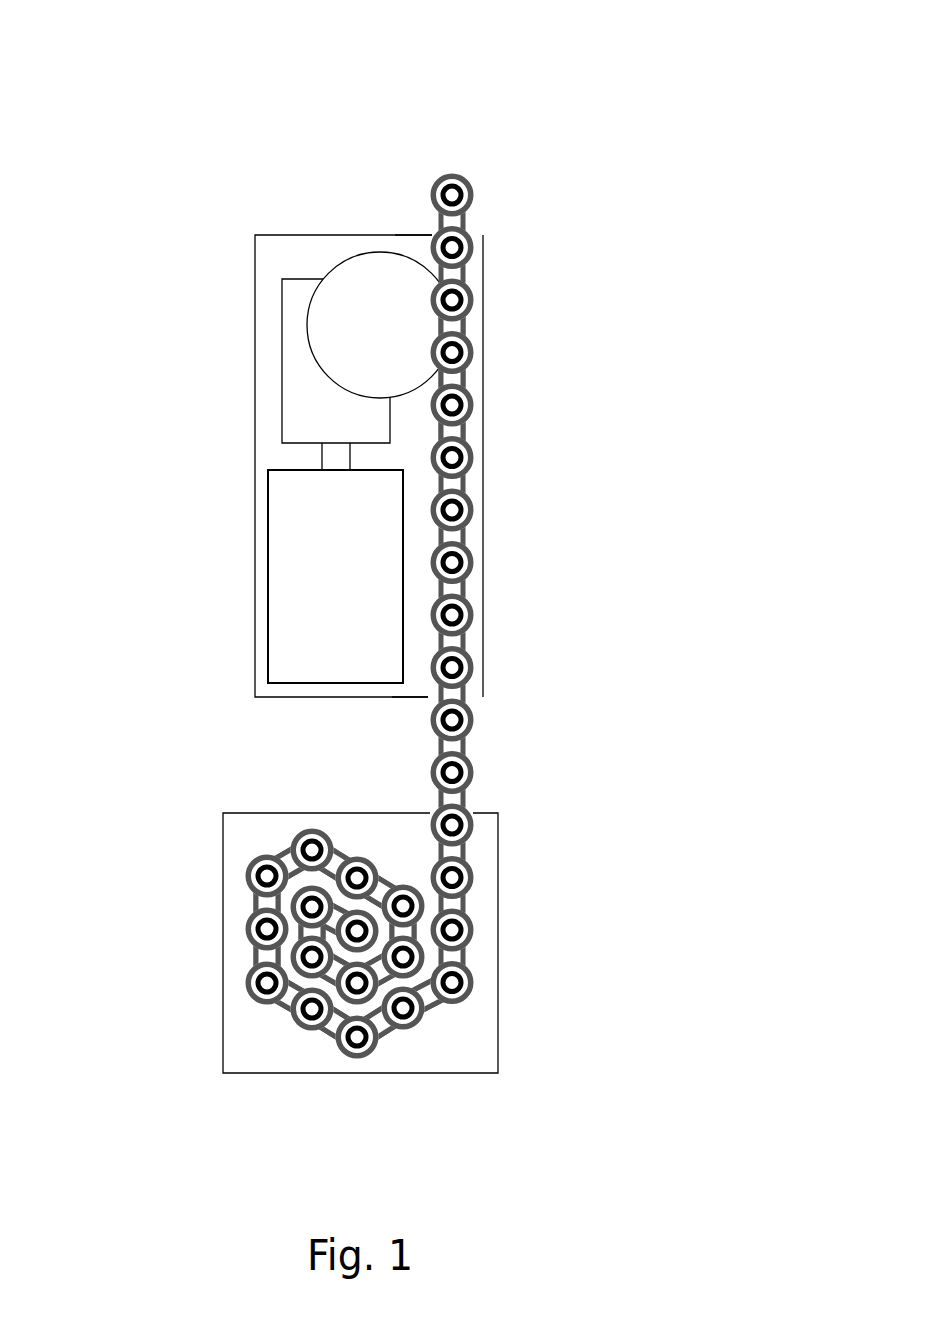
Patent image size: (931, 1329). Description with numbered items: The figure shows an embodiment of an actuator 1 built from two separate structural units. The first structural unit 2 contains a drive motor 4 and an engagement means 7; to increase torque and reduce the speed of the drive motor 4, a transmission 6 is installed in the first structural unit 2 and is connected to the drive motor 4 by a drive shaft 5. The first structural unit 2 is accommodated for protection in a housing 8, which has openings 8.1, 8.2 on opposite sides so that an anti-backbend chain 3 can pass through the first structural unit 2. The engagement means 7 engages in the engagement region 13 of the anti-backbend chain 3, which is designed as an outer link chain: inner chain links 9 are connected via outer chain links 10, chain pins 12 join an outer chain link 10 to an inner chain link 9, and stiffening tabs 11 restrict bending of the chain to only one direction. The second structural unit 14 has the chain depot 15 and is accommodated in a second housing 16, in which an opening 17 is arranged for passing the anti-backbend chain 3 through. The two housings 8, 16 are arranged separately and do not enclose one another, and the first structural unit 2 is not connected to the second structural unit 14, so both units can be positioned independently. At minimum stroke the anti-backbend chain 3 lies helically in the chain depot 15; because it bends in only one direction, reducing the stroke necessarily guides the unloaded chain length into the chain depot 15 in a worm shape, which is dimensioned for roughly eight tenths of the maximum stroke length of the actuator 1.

The actuator 1 is at (346, 536).
The first structural unit 2 is at (288, 465).
The anti-backbend chain 3 is at (423, 595).
The drive motor 4 is at (335, 576).
The drive shaft 5 is at (335, 457).
The transmission 6 is at (336, 361).
The engagement means 7 is at (380, 325).
The housing 8 is at (253, 618).
The opening 8.1 is at (430, 235).
The opening 8.2 is at (428, 698).
The inner chain link 9 is at (452, 380).
The outer chain link 10 is at (452, 433).
The stiffening tab 11 is at (473, 462).
The chain pin 12 is at (473, 517).
The engagement region 13 is at (443, 327).
The second structural unit 14 is at (307, 924).
The chain depot 15 is at (341, 954).
The second housing 16 is at (222, 843).
The opening 17 is at (472, 812).